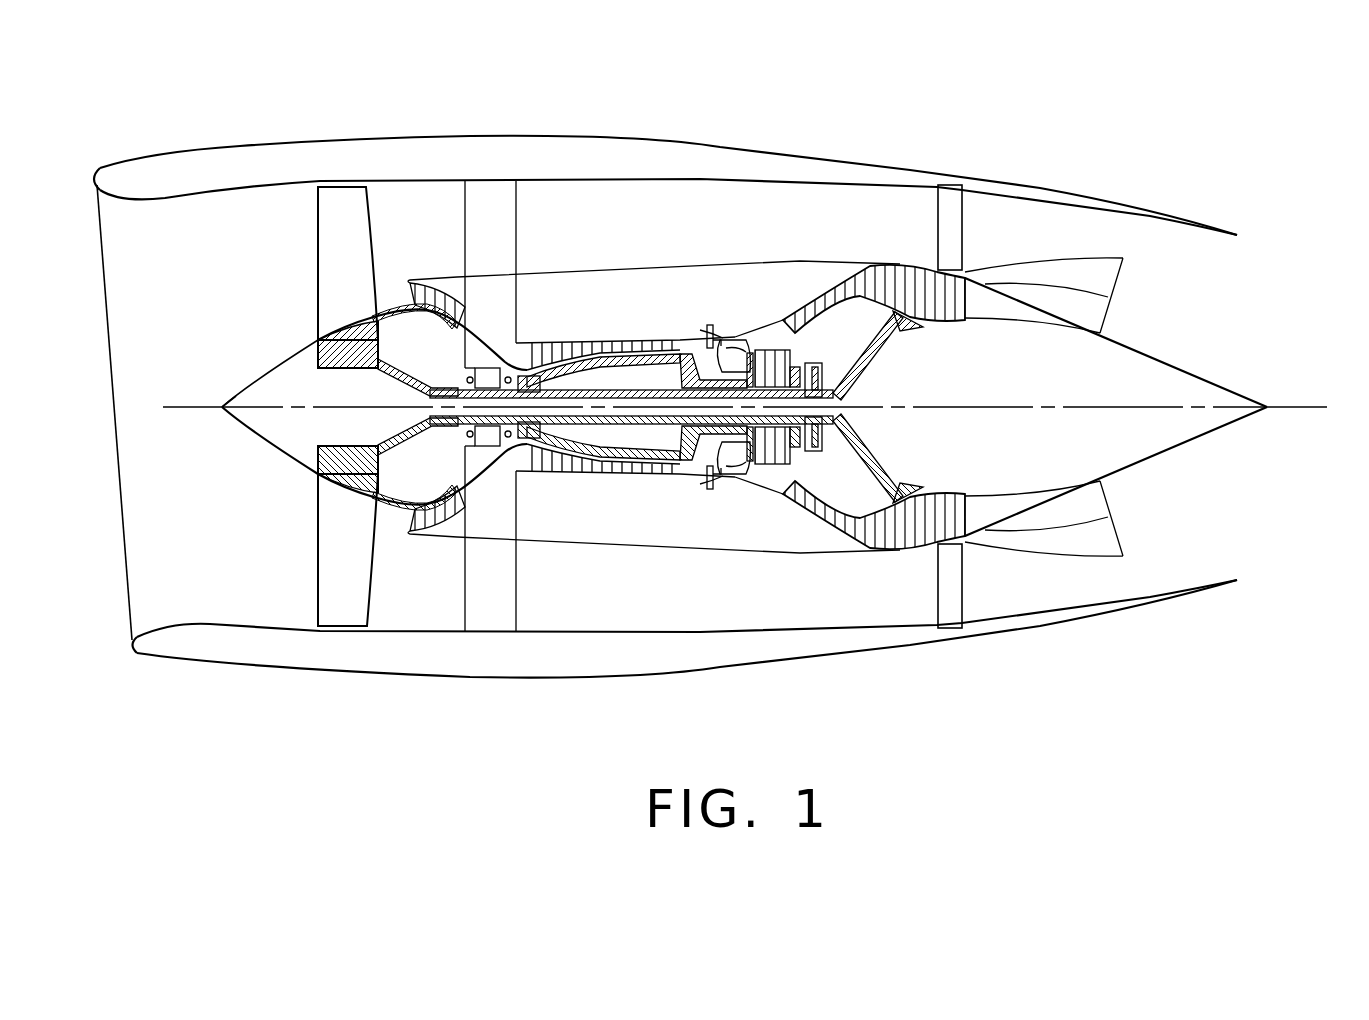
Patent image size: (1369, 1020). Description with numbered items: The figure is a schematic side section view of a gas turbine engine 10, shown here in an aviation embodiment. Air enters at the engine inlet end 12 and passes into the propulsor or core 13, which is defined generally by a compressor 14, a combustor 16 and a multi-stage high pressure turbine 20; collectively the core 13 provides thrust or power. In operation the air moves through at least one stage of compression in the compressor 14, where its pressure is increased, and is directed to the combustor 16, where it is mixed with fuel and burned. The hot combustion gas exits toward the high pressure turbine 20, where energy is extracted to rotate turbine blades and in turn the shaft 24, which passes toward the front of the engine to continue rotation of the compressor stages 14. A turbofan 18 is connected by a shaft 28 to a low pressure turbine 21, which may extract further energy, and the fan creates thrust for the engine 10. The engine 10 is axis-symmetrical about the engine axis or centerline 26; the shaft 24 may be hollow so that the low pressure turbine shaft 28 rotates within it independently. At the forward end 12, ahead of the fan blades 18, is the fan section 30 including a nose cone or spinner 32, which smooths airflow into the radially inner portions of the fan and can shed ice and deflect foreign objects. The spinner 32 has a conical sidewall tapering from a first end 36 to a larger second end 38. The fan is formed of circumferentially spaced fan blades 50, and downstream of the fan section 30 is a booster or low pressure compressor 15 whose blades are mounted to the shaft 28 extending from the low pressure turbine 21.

The gas turbine engine 10 is at (982, 122).
The engine inlet end 12 is at (115, 235).
The propulsor or core 13 is at (690, 215).
The compressor 14 is at (565, 325).
The booster or low pressure compressor 15 is at (450, 265).
The combustor 16 is at (731, 318).
The turbofan 18 is at (392, 208).
The high pressure turbine 20 is at (790, 300).
The low pressure turbine 21 is at (905, 343).
The shaft 24 is at (710, 433).
The engine axis or centerline 26 is at (1327, 407).
The low pressure turbine shaft 28 is at (658, 421).
The fan section 30 is at (265, 476).
The spinner 32 is at (273, 377).
The first end 36 is at (222, 405).
The second end 38 is at (318, 338).
The fan blades 50 is at (343, 552).